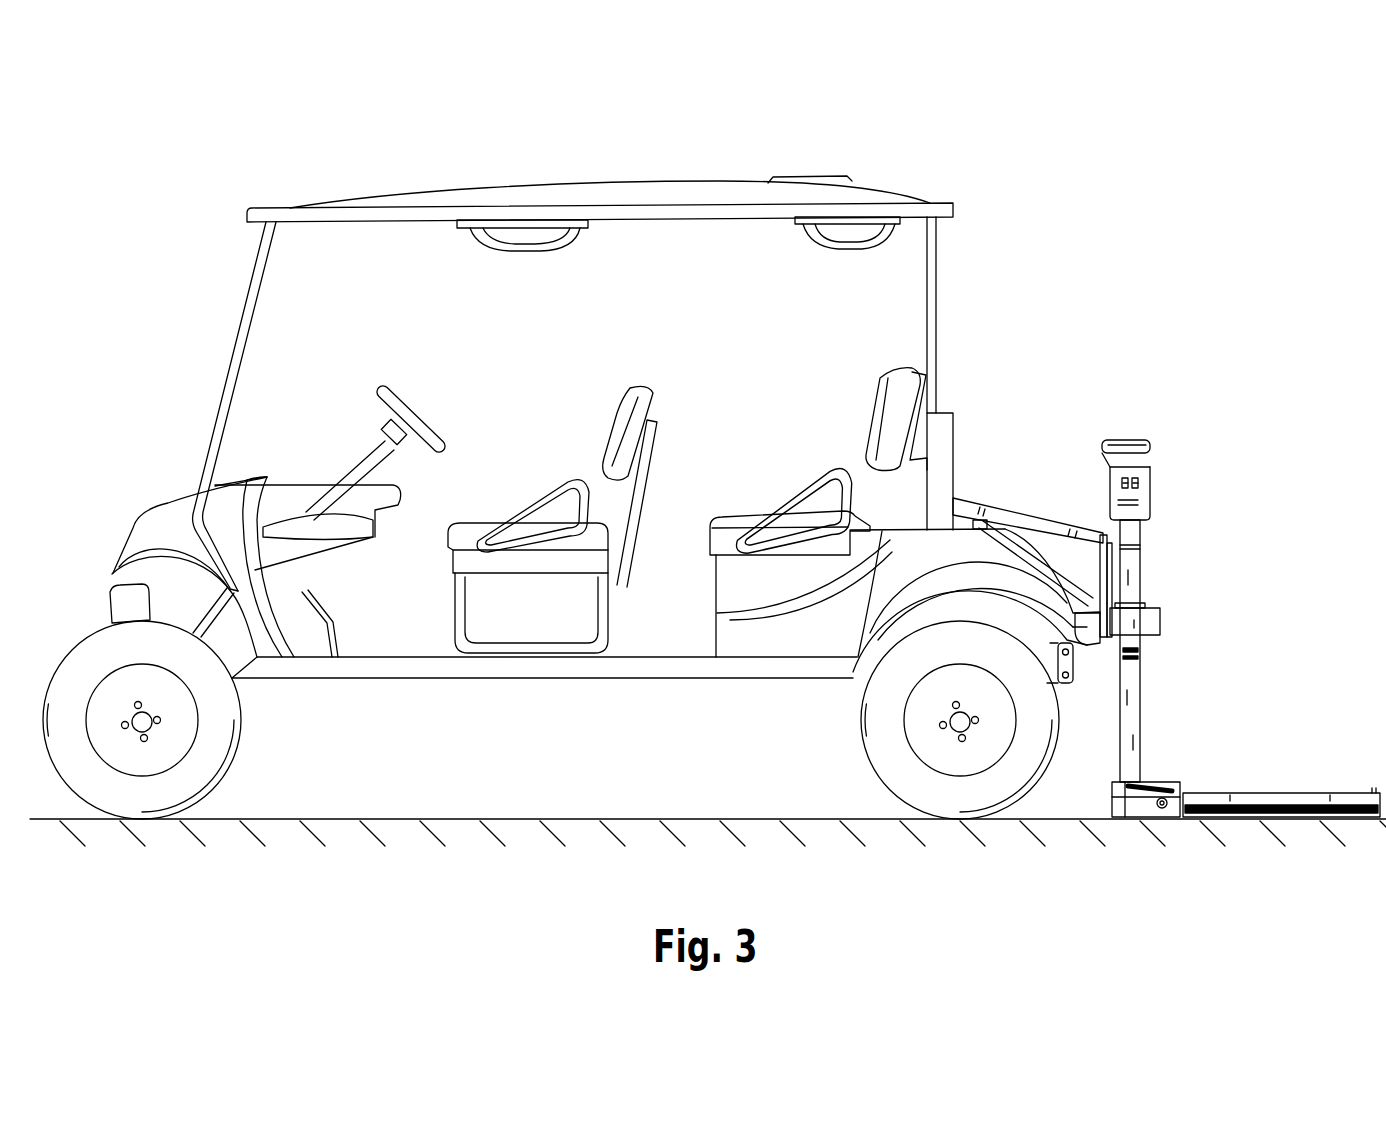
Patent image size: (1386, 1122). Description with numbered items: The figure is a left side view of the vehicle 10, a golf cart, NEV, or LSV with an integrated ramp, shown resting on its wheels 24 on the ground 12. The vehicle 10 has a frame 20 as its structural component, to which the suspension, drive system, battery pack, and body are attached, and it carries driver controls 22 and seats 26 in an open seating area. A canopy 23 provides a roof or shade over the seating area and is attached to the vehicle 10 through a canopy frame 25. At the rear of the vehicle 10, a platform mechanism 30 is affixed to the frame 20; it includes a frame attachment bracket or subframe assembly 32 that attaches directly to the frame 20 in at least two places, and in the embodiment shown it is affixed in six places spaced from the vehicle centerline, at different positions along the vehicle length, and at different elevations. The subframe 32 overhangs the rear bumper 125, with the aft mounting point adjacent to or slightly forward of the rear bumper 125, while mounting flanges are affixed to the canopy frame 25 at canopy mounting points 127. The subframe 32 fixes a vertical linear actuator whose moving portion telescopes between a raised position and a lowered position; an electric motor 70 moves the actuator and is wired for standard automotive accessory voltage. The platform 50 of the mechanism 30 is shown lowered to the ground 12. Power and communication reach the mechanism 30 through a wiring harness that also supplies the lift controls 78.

The vehicle 10 is at (190, 167).
The ground 12 is at (640, 818).
The frame 20 is at (940, 593).
The driver controls 22 is at (308, 483).
The canopy 23 is at (648, 186).
The wheels 24 is at (963, 798).
The canopy frame 25 is at (943, 417).
The seats 26 is at (517, 480).
The platform mechanism 30 is at (1241, 569).
The subframe assembly 32 is at (1042, 510).
The platform 50 is at (1310, 763).
The electric motor 70 is at (1130, 439).
The lift controls 78 is at (1140, 483).
The rear bumper 125 is at (1097, 635).
The canopy mounting points 127 is at (958, 490).